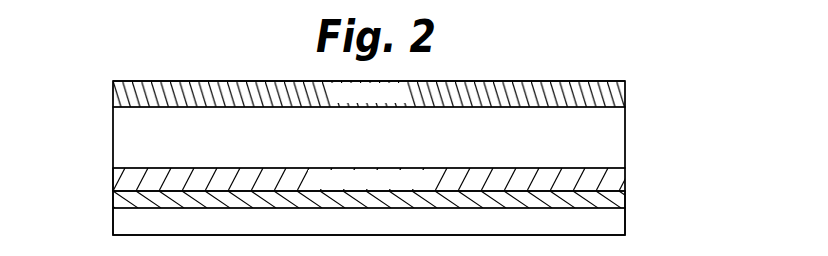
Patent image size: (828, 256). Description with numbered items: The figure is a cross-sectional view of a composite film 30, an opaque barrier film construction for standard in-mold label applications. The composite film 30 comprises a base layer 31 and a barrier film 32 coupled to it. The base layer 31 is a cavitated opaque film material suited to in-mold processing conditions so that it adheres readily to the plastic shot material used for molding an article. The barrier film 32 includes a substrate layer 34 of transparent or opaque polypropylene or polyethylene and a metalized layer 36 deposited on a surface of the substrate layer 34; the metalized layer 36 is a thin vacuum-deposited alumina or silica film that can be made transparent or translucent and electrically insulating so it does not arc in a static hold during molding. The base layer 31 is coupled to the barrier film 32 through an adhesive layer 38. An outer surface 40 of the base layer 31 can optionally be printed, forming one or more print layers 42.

The composite film 30 is at (625, 63).
The base layer 31 is at (607, 138).
The barrier film 32 is at (97, 190).
The substrate layer 34 is at (612, 221).
The metalized layer 36 is at (622, 191).
The adhesive layer 38 is at (113, 178).
The outer surface 40 is at (607, 99).
The print layer 42 is at (126, 81).